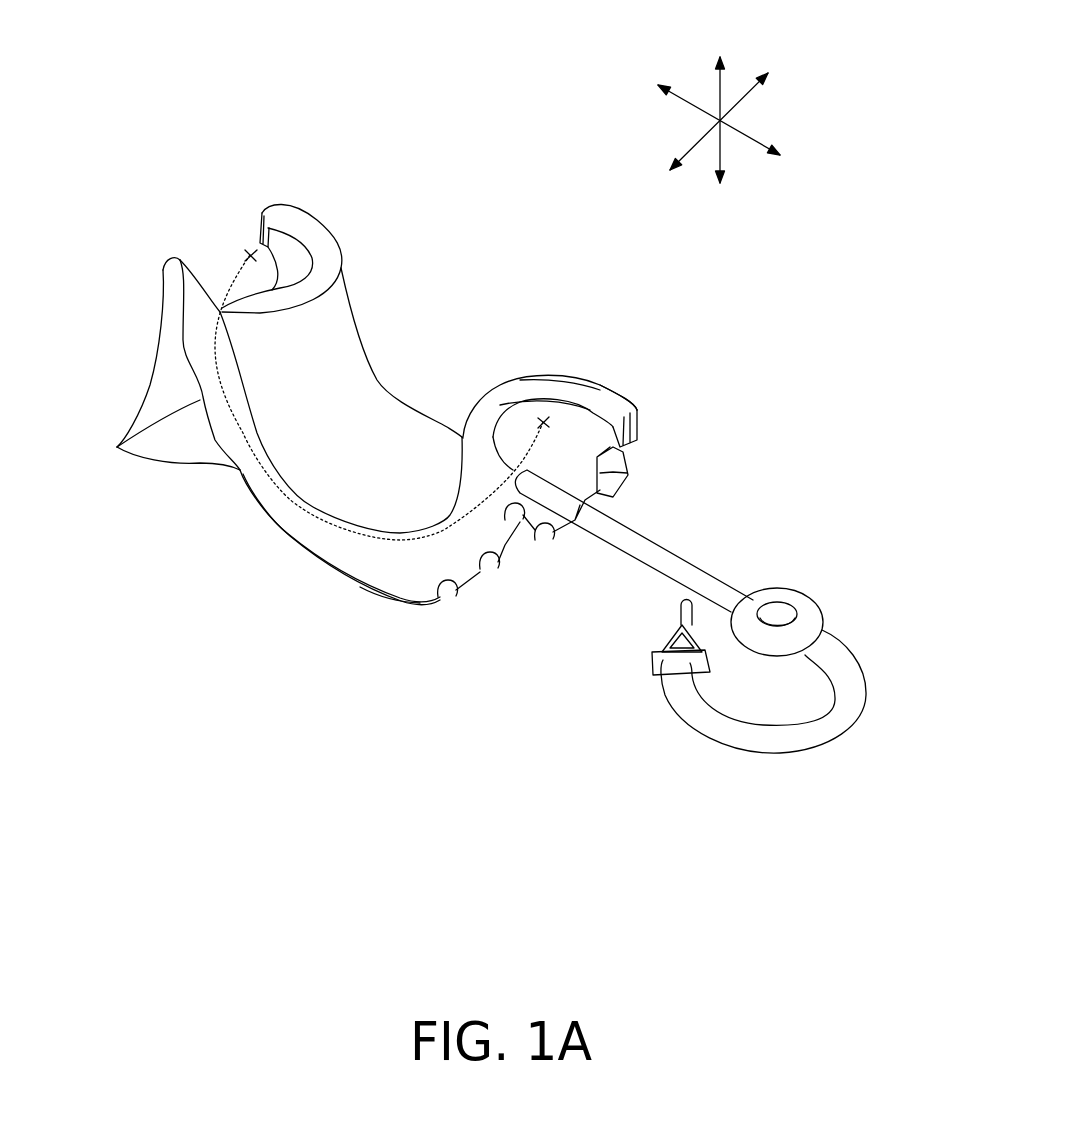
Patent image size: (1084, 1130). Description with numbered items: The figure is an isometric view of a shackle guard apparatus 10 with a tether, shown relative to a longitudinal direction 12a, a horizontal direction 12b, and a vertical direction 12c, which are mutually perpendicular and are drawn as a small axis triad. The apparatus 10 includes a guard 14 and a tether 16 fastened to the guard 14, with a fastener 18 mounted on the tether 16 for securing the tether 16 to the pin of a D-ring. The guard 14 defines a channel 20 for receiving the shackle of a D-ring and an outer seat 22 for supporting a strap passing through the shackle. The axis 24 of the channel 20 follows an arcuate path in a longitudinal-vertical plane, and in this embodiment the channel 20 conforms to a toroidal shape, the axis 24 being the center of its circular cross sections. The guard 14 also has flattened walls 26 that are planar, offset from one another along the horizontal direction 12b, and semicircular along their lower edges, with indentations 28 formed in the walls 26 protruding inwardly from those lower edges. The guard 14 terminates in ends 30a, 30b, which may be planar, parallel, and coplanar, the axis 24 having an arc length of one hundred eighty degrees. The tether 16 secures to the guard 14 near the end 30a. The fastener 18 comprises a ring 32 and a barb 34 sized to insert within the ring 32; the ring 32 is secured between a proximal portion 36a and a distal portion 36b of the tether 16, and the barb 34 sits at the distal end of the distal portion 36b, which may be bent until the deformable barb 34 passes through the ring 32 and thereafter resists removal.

The apparatus 10 is at (452, 292).
The longitudinal direction 12a is at (740, 129).
The horizontal direction 12b is at (742, 100).
The vertical direction 12c is at (717, 82).
The guard 14 is at (297, 556).
The tether 16 is at (624, 582).
The fastener 18 is at (772, 566).
The channel 20 is at (527, 422).
The outer seat 22 is at (380, 447).
The axis 24 is at (537, 448).
The flattened walls 26 is at (623, 397).
The indentations 28 is at (117, 447).
The end 30a is at (548, 387).
The end 30b is at (300, 225).
The ring 32 is at (797, 603).
The barb 34 is at (667, 638).
The proximal portion 36a is at (655, 557).
The distal portion 36b is at (837, 707).